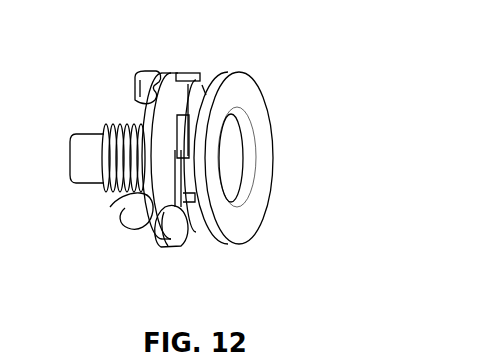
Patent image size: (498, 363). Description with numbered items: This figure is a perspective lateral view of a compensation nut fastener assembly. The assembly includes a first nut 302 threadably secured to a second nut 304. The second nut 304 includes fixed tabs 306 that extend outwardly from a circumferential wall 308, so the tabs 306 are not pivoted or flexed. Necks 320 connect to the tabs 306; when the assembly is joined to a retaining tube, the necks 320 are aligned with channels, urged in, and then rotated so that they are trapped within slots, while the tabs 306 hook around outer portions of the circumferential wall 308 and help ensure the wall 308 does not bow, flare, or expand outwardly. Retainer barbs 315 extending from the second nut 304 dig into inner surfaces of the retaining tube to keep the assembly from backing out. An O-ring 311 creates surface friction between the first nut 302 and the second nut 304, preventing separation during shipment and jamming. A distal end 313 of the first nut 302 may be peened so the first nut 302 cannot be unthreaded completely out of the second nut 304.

The first nut 302 is at (238, 72).
The second nut 304 is at (150, 117).
The fixed tabs 306 is at (156, 72).
The circumferential wall 308 is at (151, 190).
The O-ring 311 is at (177, 120).
The distal end 313 is at (83, 134).
The retainer barbs 315 is at (210, 88).
The necks 320 is at (175, 73).